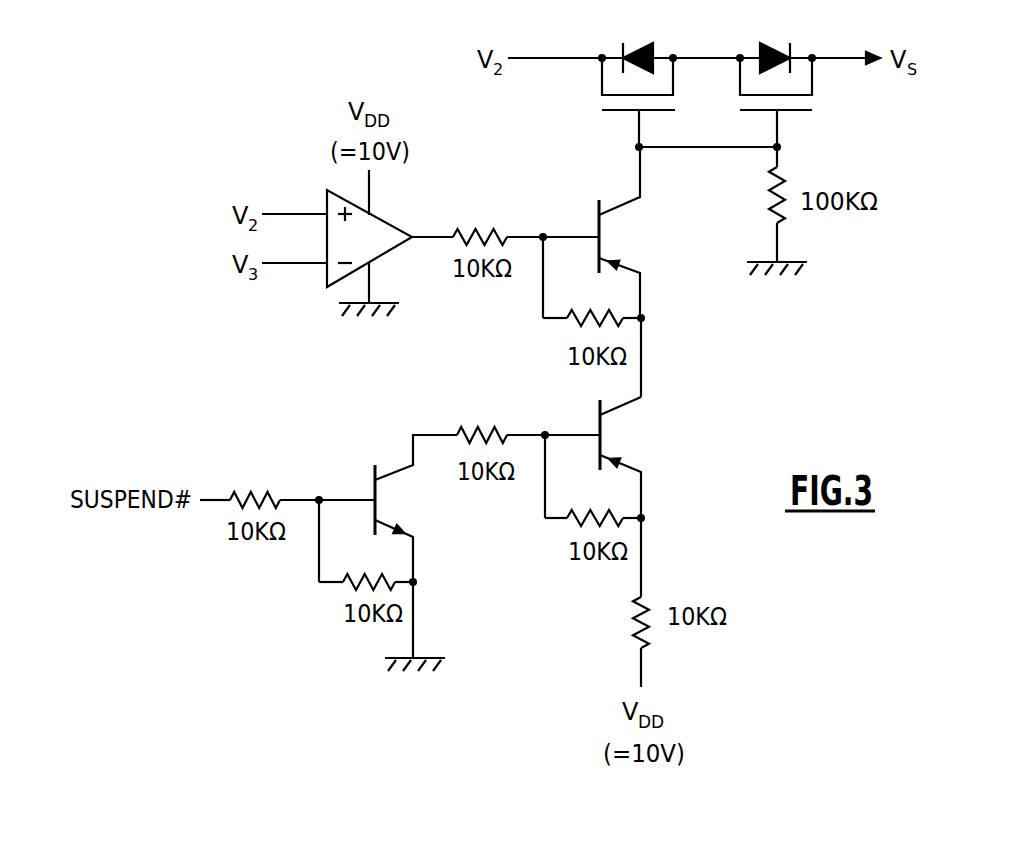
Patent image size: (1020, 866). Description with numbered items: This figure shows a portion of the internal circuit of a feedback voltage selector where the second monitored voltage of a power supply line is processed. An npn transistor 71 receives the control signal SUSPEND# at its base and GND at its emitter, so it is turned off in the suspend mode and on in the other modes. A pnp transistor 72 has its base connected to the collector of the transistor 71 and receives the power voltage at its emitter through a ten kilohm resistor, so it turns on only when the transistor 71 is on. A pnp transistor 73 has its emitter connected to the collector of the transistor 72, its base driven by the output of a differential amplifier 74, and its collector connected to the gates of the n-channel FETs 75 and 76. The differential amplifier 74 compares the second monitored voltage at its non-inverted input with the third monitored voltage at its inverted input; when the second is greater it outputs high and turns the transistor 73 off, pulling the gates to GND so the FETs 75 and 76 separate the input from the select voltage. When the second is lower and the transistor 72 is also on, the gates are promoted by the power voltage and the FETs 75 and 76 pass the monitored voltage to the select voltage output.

The npn transistor 71 is at (409, 503).
The pnp transistor 72 is at (639, 433).
The pnp transistor 73 is at (636, 231).
The differential amplifier 74 is at (409, 212).
The n-channel FET 75 is at (641, 30).
The n-channel FET 76 is at (779, 30).